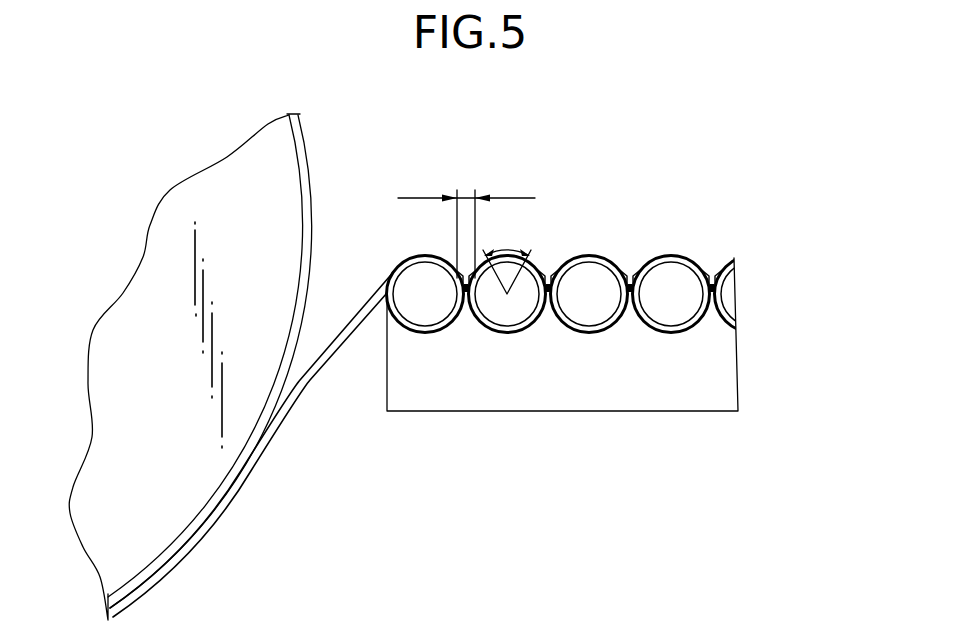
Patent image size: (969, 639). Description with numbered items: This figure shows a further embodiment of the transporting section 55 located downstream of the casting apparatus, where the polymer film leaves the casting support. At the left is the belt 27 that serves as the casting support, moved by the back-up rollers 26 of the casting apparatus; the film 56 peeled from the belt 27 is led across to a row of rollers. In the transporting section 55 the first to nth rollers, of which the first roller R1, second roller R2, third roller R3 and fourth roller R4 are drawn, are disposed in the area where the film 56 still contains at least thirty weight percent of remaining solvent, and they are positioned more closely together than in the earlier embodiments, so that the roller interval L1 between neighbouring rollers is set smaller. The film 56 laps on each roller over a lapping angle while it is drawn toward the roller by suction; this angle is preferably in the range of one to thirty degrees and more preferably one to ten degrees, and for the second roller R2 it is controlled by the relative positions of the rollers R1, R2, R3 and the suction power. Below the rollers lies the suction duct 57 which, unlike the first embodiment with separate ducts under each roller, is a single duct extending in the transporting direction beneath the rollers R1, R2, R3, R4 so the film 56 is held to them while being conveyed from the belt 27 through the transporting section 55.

The back-up rollers 26 is at (217, 190).
The belt 27 is at (302, 153).
The transporting section 55 is at (489, 565).
The conveying belt 56 is at (288, 432).
The suction duct 57 is at (602, 411).
The first roller R1 is at (410, 285).
The second roller R2 is at (528, 282).
The third roller R3 is at (593, 280).
The fourth roller R4 is at (678, 277).
The roller interval L1 is at (466, 216).